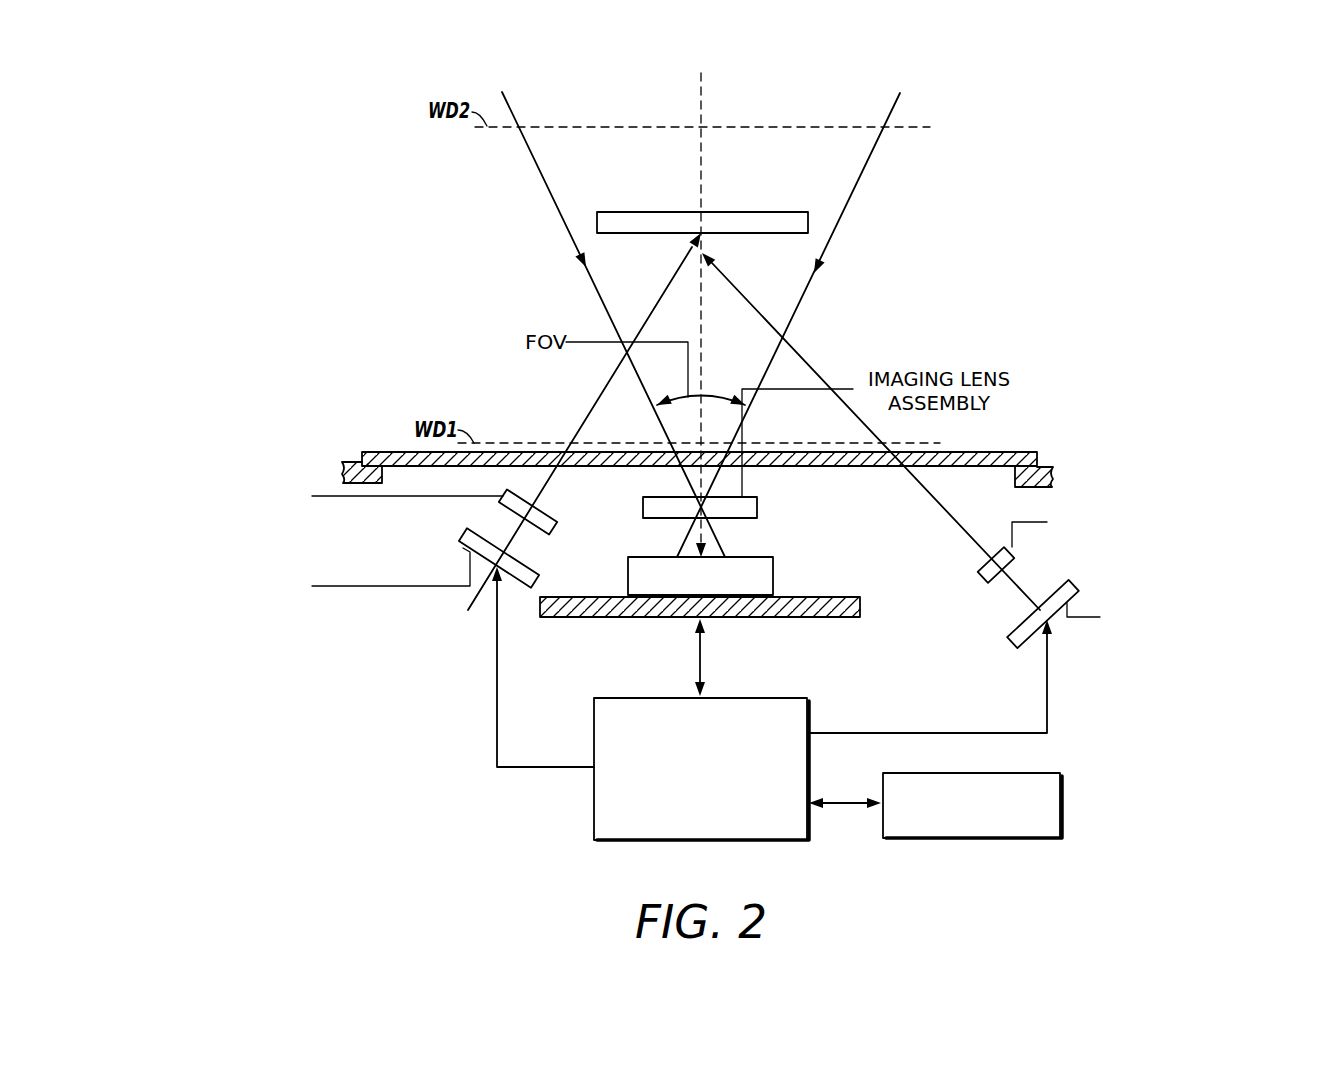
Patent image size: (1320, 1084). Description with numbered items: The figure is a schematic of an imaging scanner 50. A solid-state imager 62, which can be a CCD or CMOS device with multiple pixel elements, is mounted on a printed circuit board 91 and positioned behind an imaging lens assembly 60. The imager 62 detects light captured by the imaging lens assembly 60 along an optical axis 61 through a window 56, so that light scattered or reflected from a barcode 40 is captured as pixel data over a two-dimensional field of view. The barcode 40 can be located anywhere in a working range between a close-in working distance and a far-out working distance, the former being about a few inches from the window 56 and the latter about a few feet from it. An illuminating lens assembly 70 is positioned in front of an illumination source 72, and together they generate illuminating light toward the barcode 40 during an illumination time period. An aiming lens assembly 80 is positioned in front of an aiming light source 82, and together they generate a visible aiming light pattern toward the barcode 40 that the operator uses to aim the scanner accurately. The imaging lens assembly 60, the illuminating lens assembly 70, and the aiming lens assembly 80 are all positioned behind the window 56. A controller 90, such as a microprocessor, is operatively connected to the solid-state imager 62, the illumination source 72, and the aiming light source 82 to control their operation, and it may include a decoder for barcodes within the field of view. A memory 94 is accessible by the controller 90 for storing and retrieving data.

The barcode 40 is at (760, 211).
The imaging scanner 50 is at (866, 275).
The window 56 is at (378, 452).
The imaging lens assembly 60 is at (643, 507).
The optical axis 61 is at (703, 97).
The solid-state imager 62 is at (628, 578).
The illuminating lens assembly 70 is at (1145, 497).
The illumination source 72 is at (1192, 644).
The aiming lens assembly 80 is at (209, 468).
The aiming light source 82 is at (220, 612).
The controller 90 is at (594, 731).
The printed circuit board 91 is at (797, 620).
The memory 94 is at (1042, 773).